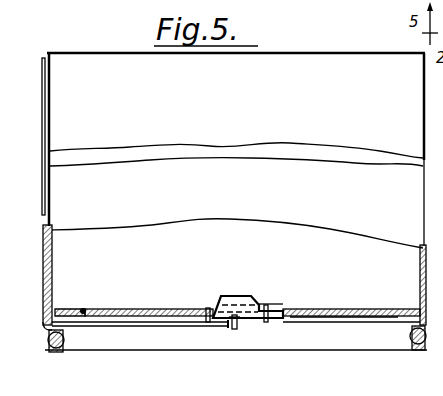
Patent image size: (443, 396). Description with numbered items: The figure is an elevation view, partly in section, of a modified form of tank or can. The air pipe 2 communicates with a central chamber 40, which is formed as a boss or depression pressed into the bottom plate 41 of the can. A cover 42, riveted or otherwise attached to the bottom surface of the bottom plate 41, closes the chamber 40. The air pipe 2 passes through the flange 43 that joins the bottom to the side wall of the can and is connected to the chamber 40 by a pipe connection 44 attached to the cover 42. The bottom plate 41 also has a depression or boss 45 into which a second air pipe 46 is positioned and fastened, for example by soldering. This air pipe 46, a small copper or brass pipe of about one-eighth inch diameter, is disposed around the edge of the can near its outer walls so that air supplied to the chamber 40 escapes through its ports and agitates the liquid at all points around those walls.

The air pipe 2 is at (45, 172).
The central chamber 40 is at (243, 298).
The bottom plate 41 is at (66, 310).
The cover 42 is at (258, 319).
The flange 43 is at (52, 346).
The pipe connection 44 is at (238, 330).
The depression or boss 45 is at (150, 310).
The air pipe 46 is at (284, 305).